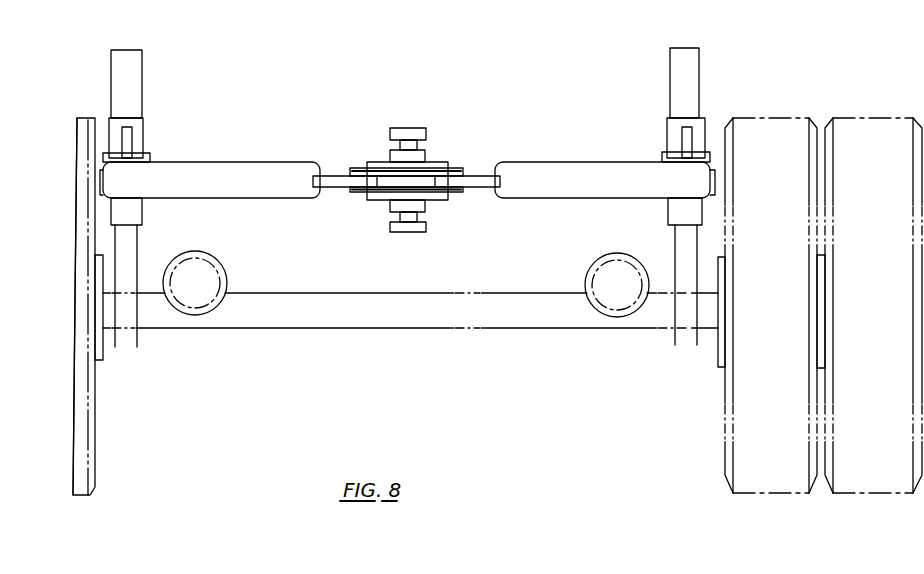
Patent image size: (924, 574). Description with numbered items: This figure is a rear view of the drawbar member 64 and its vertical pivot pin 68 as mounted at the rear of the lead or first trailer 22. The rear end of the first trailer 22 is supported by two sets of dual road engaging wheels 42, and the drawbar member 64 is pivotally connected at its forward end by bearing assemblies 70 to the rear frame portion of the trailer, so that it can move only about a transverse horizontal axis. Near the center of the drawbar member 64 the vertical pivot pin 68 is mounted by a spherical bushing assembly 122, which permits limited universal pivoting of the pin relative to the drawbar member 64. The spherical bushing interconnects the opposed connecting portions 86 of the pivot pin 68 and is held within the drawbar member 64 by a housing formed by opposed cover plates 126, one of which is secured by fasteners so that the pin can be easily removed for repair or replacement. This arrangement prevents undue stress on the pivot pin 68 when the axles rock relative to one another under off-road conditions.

The first trailer 22 is at (720, 102).
The dual road engaging wheels 42 is at (85, 383).
The drawbar member 64 is at (245, 160).
The vertical pivot pin 68 is at (435, 142).
The bearing assemblies 70 is at (115, 145).
The connecting portions 86 is at (400, 140).
The spherical bushing assembly 122 is at (463, 162).
The cover plates 126 is at (357, 168).